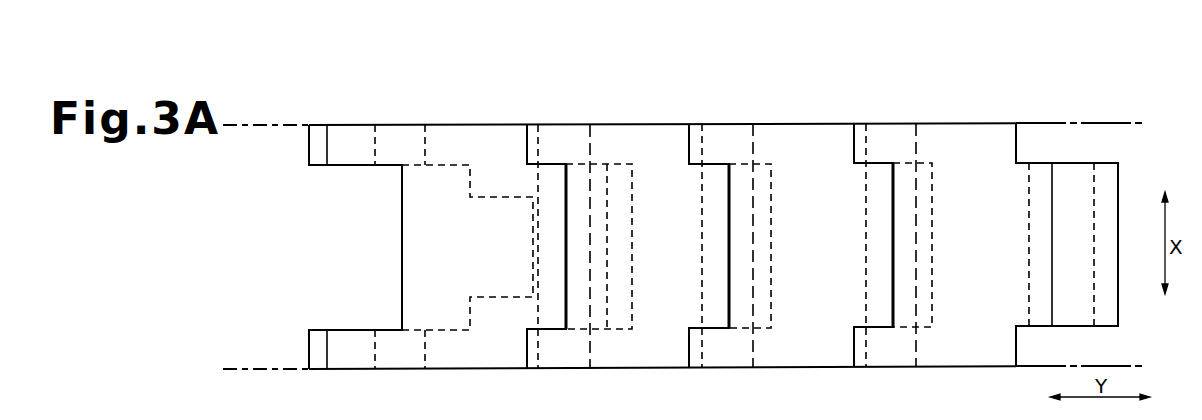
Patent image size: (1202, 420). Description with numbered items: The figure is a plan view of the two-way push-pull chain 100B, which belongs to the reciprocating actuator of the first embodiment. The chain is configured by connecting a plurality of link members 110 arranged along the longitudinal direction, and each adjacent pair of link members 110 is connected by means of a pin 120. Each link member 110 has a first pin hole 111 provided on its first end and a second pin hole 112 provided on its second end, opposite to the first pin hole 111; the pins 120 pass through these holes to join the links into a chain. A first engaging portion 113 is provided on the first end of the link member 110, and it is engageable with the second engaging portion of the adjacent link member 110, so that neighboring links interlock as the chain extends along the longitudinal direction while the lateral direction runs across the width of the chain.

The two-way push-pull chain 100B is at (438, 83).
The first engaging portion 113 is at (324, 140).
The first pin hole 111 is at (375, 147).
The link member 110 is at (472, 143).
The second pin hole 112 is at (607, 178).
The pin 120 is at (733, 144).